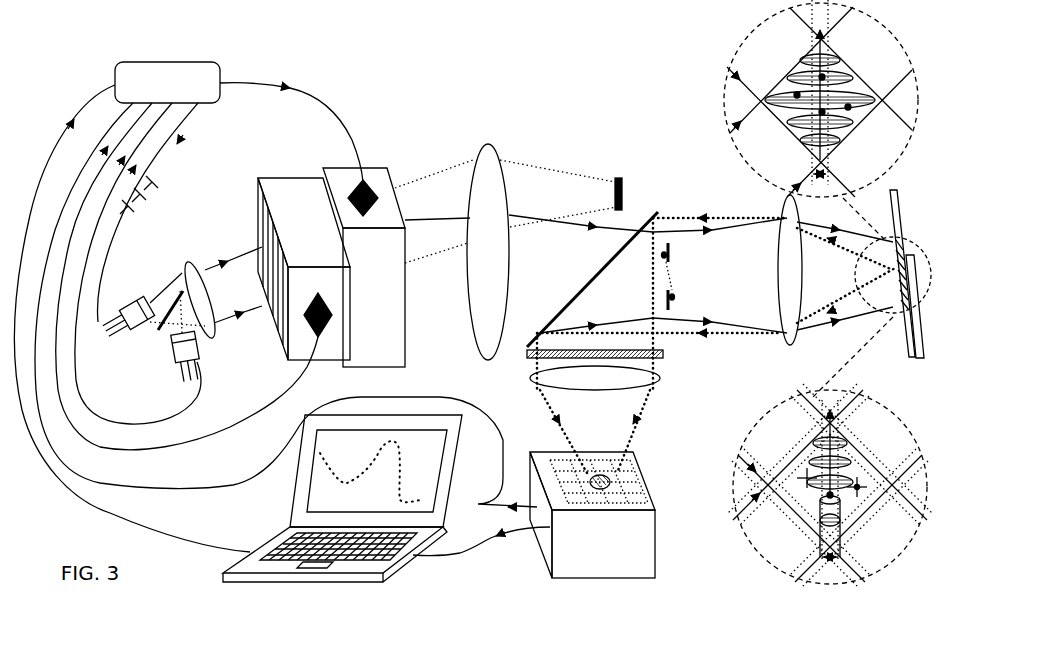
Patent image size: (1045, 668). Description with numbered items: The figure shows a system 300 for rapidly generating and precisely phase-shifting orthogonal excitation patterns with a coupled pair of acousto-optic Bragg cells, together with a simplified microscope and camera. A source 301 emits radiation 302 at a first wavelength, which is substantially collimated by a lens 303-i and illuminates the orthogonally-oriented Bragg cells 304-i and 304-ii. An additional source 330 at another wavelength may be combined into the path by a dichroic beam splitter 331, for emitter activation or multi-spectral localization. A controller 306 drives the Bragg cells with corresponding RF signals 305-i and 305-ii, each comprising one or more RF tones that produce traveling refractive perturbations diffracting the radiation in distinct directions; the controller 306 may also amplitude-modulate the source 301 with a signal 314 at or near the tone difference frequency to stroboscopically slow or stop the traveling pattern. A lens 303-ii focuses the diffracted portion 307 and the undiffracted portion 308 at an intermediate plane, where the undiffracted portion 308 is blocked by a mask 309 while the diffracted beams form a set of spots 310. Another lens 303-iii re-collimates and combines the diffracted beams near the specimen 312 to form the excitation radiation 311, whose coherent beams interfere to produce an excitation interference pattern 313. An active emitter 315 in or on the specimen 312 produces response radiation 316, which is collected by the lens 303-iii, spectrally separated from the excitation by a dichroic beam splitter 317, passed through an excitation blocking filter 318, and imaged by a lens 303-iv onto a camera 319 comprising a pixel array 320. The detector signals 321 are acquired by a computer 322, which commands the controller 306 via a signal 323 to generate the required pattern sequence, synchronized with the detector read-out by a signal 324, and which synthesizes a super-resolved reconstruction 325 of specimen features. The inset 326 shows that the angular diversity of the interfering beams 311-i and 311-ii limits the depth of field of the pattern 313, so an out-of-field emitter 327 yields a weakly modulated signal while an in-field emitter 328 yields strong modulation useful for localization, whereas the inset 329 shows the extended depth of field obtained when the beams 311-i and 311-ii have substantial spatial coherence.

The system 300 is at (487, 86).
The source 301 is at (134, 340).
The radiation 302 is at (233, 247).
The lens 303-i is at (187, 262).
The lens 303-ii is at (488, 145).
The lens 303-iii is at (783, 200).
The lens 303-iv is at (533, 377).
The acousto-optic Bragg cell 304-i is at (265, 175).
The acousto-optic Bragg cell 304-ii is at (340, 167).
The signal 305-i is at (290, 389).
The signal 305-ii is at (307, 93).
The controller 306 is at (167, 82).
The diffracted portion 307 is at (440, 220).
The undiffracted portion 308 is at (548, 168).
The mask 309 is at (620, 177).
The spots 310 is at (678, 270).
The excitation radiation 311 is at (798, 330).
The specimen 312 is at (914, 360).
The excitation interference pattern 313 is at (897, 213).
The signal 314 is at (163, 162).
The active emitter 315 is at (893, 273).
The response radiation 316 is at (740, 333).
The dichroic beam splitter 317 is at (578, 290).
The excitation blocking filter 318 is at (665, 356).
The camera 319 is at (592, 515).
The pixel array 320 is at (632, 467).
The detector signals 321 is at (460, 557).
The computer 322 is at (272, 533).
The signal 323 is at (110, 515).
The signal 324 is at (286, 305).
The super-resolved reconstruction 325 is at (410, 463).
The inset 326 is at (772, 560).
The emitter 327 is at (850, 106).
The emitter 328 is at (825, 76).
The inset 329 is at (726, 140).
The source 330 is at (171, 366).
The dichroic beam splitter 331 is at (180, 277).
The interfering beam 311-i is at (790, 15).
The interfering beam 311-ii is at (800, 181).